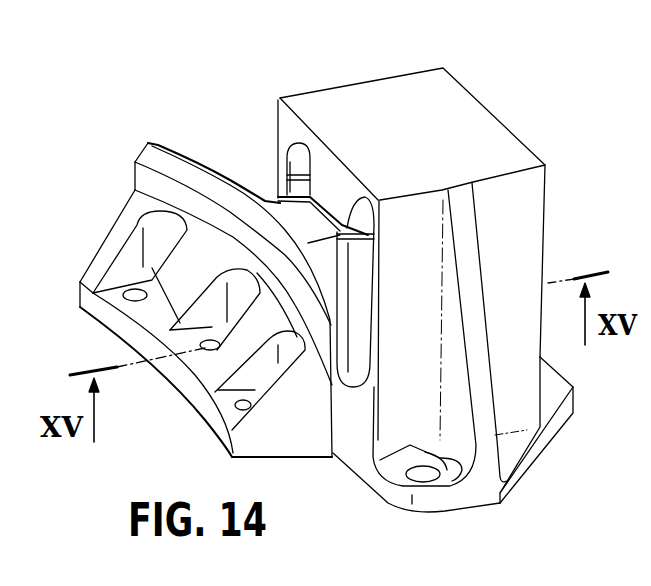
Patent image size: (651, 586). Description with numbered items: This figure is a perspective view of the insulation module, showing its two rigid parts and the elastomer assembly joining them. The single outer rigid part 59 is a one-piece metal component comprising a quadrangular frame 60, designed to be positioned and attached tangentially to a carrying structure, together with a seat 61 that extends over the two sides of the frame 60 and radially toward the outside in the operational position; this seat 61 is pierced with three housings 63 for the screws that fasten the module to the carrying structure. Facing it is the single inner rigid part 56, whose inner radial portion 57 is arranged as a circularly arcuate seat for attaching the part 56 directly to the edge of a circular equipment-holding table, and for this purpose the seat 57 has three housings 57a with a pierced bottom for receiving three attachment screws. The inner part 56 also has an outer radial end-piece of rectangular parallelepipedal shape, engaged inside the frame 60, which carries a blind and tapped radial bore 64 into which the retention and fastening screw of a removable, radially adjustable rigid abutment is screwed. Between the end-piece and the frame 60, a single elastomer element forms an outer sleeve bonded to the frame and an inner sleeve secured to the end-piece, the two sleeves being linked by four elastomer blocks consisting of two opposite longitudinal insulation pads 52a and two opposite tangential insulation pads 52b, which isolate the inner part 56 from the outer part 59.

The longitudinal insulation pad 52a is at (322, 183).
The tangential insulation pad 52b is at (300, 183).
The inner rigid part 56 is at (253, 184).
The inner radial portion 57 is at (162, 160).
The housings 57a is at (195, 322).
The outer rigid part 59 is at (465, 76).
The quadrangular frame 60 is at (368, 100).
The seat 61 is at (555, 383).
The housings for screws 63 is at (430, 466).
The blind and tapped radial bore 64 is at (470, 250).